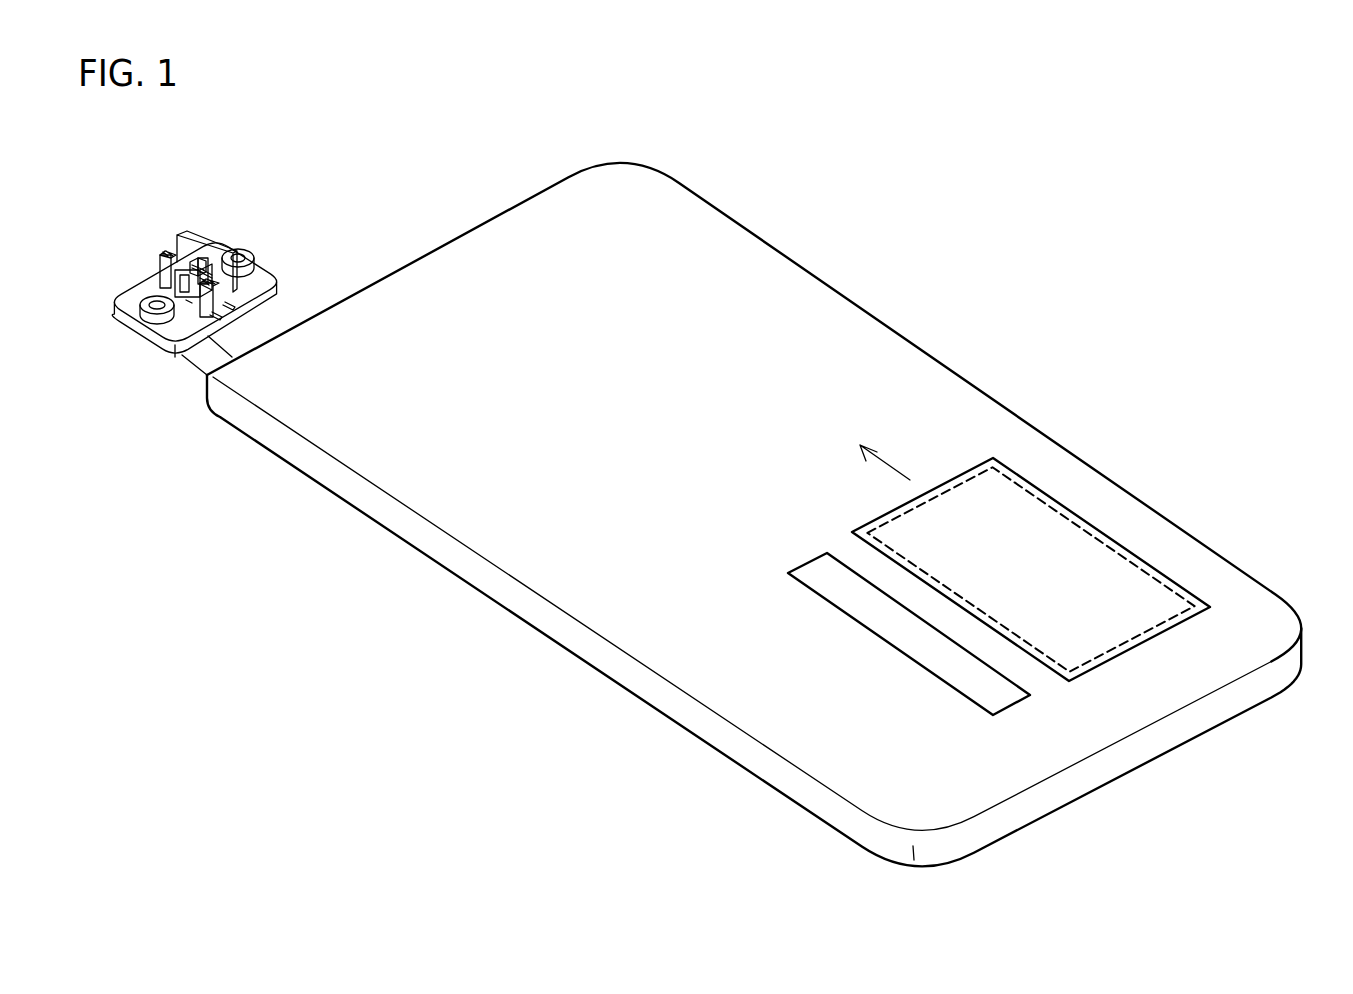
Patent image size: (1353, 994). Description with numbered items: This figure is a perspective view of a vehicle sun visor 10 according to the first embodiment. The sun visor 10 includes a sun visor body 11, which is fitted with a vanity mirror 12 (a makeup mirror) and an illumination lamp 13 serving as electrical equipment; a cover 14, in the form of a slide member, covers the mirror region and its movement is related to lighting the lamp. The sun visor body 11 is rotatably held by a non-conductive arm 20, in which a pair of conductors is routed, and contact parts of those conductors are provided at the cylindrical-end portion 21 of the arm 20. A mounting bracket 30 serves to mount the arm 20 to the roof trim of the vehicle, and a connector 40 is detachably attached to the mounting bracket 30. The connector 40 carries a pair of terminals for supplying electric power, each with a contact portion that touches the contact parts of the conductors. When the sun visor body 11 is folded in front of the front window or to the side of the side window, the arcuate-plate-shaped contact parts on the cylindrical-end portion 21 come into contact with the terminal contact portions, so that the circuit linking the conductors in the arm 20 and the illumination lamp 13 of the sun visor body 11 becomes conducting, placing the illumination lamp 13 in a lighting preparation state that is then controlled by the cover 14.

The vehicle sun visor 10 is at (754, 515).
The sun visor body 11 is at (840, 292).
The vanity mirror 12 is at (1177, 618).
The illumination lamp 13 is at (1013, 703).
The cover 14 is at (1120, 660).
The arm 20 is at (205, 365).
The cylindrical-end portion 21 is at (207, 250).
The mounting bracket 30 is at (258, 284).
The connector 40 is at (208, 244).